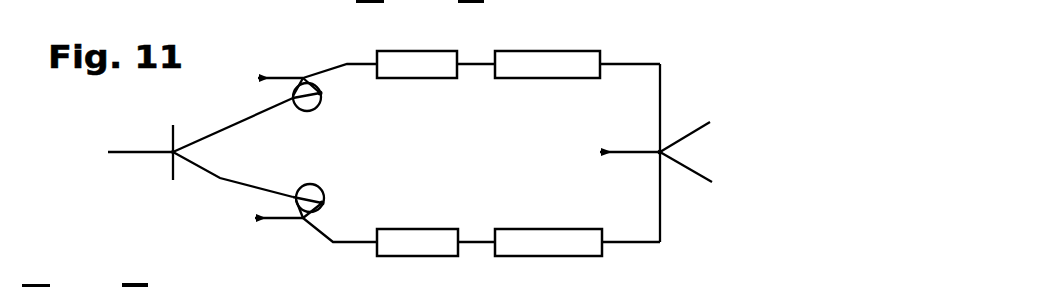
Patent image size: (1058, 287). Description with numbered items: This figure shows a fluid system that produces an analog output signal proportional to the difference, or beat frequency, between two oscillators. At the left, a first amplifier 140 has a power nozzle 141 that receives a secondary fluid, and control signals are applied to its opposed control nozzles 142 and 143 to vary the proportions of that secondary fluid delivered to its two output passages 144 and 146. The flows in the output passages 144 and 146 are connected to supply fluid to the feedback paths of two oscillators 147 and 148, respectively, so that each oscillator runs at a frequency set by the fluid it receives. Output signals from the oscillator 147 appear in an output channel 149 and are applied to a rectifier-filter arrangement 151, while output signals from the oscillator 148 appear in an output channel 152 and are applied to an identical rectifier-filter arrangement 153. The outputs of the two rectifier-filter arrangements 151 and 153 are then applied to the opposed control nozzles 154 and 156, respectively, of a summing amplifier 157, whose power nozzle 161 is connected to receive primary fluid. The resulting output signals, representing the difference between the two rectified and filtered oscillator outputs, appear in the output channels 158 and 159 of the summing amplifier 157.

The first amplifier 140 is at (152, 158).
The power nozzle 141 is at (158, 149).
The control nozzle 142 is at (177, 127).
The control nozzle 143 is at (172, 172).
The output passage 144 is at (203, 137).
The output passage 146 is at (213, 168).
The oscillator 147 is at (289, 73).
The oscillator 148 is at (285, 229).
The output channel 149 is at (327, 69).
The rectifier-filter arrangement 151 is at (492, 46).
The output channel 152 is at (316, 243).
The rectifier-filter arrangement 153 is at (518, 226).
The control nozzle 154 is at (660, 116).
The control nozzle 156 is at (661, 197).
The summing amplifier 157 is at (648, 161).
The output channel 158 is at (700, 122).
The output channel 159 is at (705, 172).
The power nozzle 161 is at (638, 132).